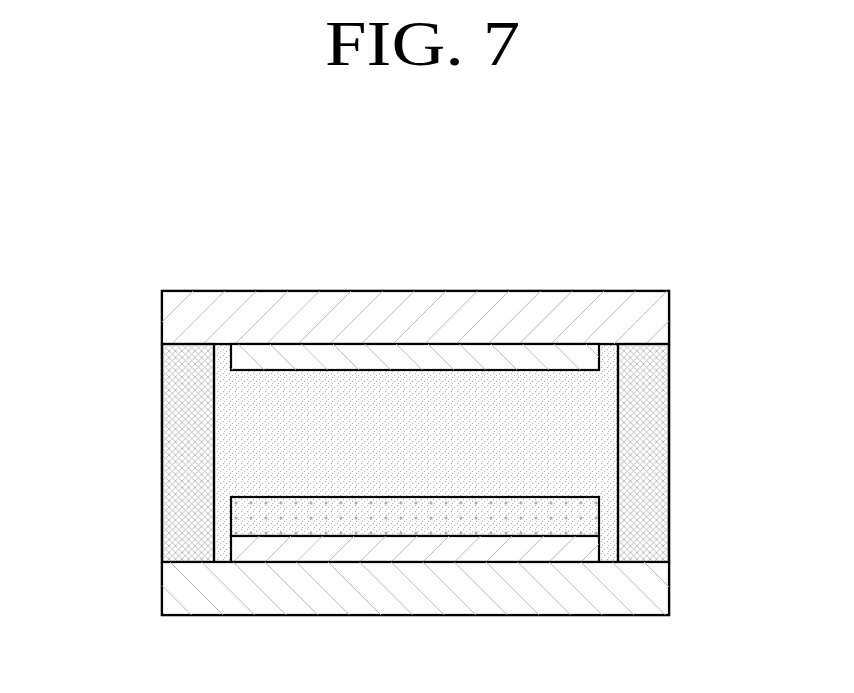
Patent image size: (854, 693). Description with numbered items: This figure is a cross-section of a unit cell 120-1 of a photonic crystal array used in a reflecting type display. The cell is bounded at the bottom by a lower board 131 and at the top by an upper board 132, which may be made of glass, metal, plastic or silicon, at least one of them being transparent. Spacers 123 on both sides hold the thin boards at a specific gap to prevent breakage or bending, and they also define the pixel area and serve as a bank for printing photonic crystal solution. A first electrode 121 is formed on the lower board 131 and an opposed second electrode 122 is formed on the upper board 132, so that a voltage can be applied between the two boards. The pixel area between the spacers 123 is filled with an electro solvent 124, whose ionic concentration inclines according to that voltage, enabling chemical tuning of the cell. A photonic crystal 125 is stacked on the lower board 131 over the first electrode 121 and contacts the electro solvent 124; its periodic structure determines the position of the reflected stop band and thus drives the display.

The unit cell 120-1 is at (457, 195).
The first electrode 121 is at (592, 547).
The second electrode 122 is at (592, 360).
The spacers 123 is at (182, 448).
The electro solvent 124 is at (587, 397).
The photonic crystal 125 is at (593, 512).
The lower board 131 is at (655, 590).
The upper board 132 is at (661, 313).